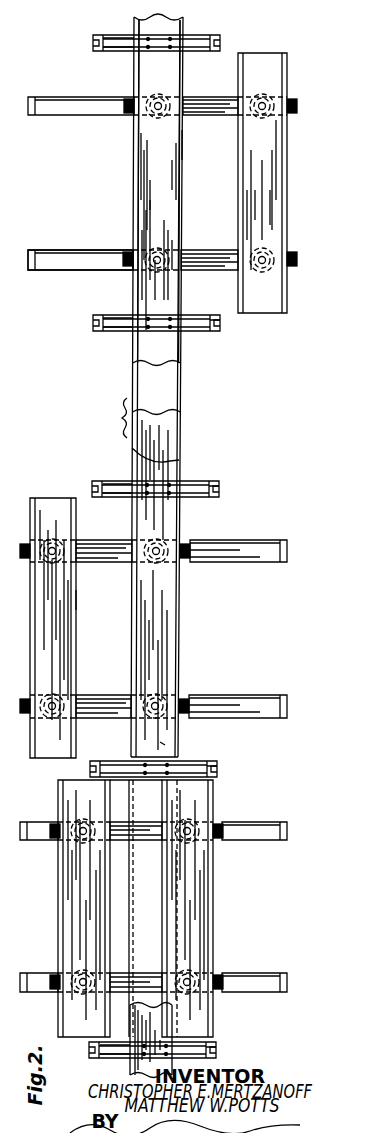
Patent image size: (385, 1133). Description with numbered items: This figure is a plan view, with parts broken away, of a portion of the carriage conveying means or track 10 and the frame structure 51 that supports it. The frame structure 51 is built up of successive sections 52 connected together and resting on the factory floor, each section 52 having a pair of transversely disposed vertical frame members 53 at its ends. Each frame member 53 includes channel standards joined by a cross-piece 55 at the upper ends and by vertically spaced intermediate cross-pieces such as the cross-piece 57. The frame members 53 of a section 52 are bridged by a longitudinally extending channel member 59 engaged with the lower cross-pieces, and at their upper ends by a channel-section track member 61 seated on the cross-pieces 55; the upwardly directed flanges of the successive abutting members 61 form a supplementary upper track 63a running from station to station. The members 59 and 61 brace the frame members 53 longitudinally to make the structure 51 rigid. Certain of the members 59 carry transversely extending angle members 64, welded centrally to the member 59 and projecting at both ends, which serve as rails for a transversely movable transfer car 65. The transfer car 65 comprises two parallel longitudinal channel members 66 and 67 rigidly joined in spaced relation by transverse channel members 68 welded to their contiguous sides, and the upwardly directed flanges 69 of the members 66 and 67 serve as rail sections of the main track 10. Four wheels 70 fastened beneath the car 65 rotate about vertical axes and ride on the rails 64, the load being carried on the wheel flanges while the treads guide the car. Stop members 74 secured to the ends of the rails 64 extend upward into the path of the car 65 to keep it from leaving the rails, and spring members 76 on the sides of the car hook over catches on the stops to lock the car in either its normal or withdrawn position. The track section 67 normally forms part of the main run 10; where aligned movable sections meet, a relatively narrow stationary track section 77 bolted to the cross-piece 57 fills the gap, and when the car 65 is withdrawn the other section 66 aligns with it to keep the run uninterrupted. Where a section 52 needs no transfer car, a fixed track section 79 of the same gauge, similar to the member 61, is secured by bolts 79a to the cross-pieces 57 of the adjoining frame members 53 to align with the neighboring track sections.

The track 10 is at (108, 398).
The frame structure 51 is at (224, 327).
The section 52 is at (190, 72).
The vertical frame member 53 is at (92, 43).
The cross-piece 55 is at (112, 48).
The cross-piece 57 is at (120, 780).
The longitudinally extending member 59 is at (150, 905).
The track section 61 is at (137, 170).
The upper track 63a is at (186, 138).
The angle member 64 is at (50, 116).
The transfer car 65 is at (78, 602).
The channel member 66 is at (36, 600).
The channel member 67 is at (270, 170).
The transverse channel member 68 is at (222, 115).
The flange 69 is at (62, 500).
The wheel 70 is at (44, 546).
The stop member 74 is at (30, 262).
The spring member 76 is at (124, 106).
The stationary track section 77 is at (170, 770).
The fixed track section 79 is at (181, 425).
The bolt 79a is at (134, 480).